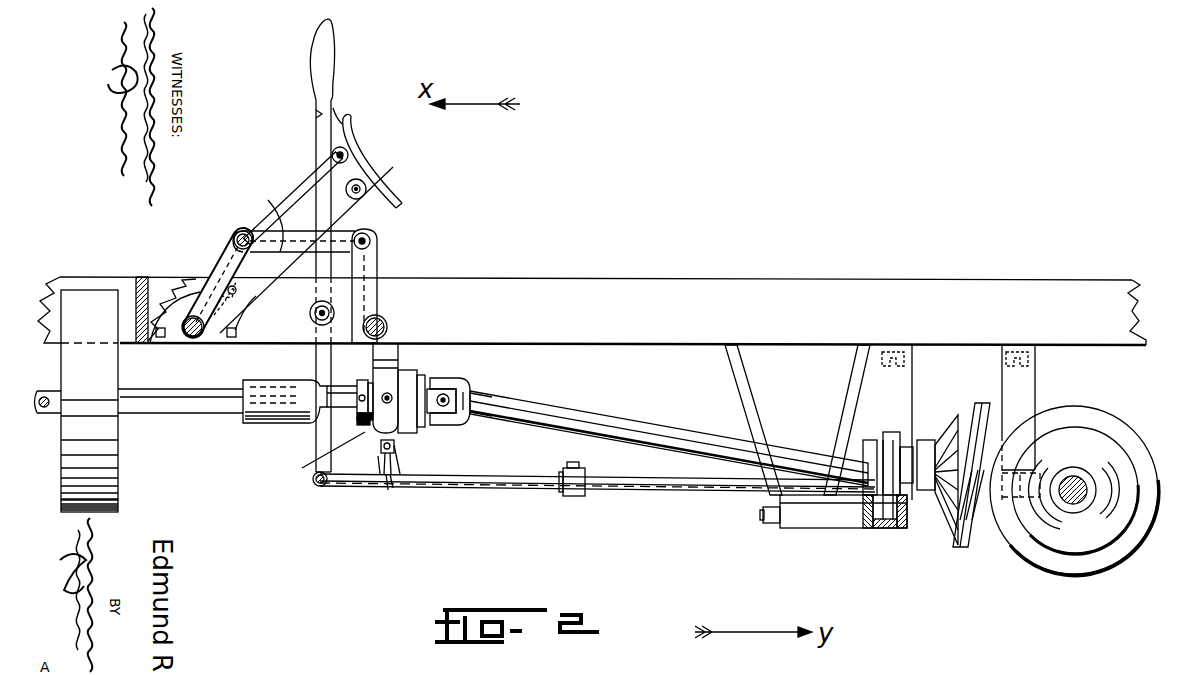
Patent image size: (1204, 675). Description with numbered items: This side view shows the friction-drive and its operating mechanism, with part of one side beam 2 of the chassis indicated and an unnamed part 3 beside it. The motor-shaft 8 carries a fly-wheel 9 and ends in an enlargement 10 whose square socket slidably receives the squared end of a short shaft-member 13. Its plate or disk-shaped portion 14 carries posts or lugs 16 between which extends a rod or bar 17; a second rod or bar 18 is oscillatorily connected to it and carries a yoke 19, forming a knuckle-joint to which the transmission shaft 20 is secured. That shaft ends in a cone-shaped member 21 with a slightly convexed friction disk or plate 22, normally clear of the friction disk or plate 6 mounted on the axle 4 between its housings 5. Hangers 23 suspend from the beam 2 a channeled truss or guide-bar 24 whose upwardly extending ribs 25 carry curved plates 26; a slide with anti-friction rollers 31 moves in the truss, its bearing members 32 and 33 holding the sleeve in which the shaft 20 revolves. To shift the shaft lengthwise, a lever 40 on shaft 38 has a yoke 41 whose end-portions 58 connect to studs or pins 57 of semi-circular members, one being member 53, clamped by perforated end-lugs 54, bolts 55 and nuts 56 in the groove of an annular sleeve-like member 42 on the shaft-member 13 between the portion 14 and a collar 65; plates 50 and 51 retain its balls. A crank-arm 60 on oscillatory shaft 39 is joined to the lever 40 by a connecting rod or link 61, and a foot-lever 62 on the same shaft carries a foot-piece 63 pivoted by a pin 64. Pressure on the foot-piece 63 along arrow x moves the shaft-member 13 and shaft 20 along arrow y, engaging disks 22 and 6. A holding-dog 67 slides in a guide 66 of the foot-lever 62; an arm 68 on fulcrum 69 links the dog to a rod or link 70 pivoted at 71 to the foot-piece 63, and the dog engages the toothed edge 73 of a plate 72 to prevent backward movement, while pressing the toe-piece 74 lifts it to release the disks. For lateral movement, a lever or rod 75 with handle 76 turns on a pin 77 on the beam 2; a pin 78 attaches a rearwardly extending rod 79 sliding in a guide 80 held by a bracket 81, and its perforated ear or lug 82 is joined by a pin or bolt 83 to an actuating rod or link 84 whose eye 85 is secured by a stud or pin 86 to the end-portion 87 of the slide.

The side beam 2 is at (852, 292).
The beam end block 3 is at (137, 291).
The axle 4 is at (1086, 506).
The housing 5 is at (1102, 453).
The friction disk or plate 6 is at (1120, 431).
The motor-shaft 8 is at (122, 401).
The fly-wheel 9 is at (118, 474).
The enlargement 10 is at (249, 424).
The shaft-member 13 is at (347, 402).
The plate or disk-shaped portion 14 is at (422, 379).
The posts or lugs 16 is at (455, 386).
The rod or bar 17 is at (471, 399).
The second rod or bar 18 is at (474, 408).
The yoke 19 is at (494, 422).
The transmission shaft 20 is at (615, 418).
The cone-shaped member 21 is at (942, 422).
The friction disk or plate 22 is at (986, 405).
The hanger 23 is at (852, 386).
The channeled truss or guide-bar 24 is at (781, 525).
The upwardly extending rib 25 is at (863, 527).
The curved plate 26 is at (792, 532).
The anti-friction wheel or roller 31 is at (906, 530).
The retaining or bearing member 32 is at (927, 458).
The retaining or bearing member 33 is at (905, 433).
The shaft 38 is at (387, 321).
The shaft 39 is at (201, 339).
The lever 40 is at (378, 265).
The yoke 41 is at (400, 368).
The annular sleeve-like member 42 is at (374, 513).
The plate 50 is at (457, 423).
The plate 51 is at (371, 375).
The semi-circular member 53 is at (382, 476).
The perforated end-lug 54 is at (399, 468).
The bolt 55 is at (388, 476).
The nut 56 is at (392, 476).
The stud or pin 57 is at (357, 421).
The end-portion of the yoke 58 is at (331, 489).
The crank-arm 60 is at (225, 285).
The connecting rod or link 61 is at (373, 237).
The foot-lever 62 is at (284, 263).
The foot-piece 63 is at (403, 203).
The pin 64 is at (368, 187).
The collar 65 is at (302, 464).
The guide 66 is at (246, 291).
The holding-dog 67 is at (249, 333).
The arm 68 is at (268, 207).
The fulcrum 69 is at (236, 245).
The rod or link 70 is at (312, 176).
The pivot 71 is at (350, 161).
The plate 72 is at (174, 338).
The serrated or toothed edge 73 is at (178, 291).
The toe-piece 74 is at (344, 126).
The lever or rod 75 is at (318, 121).
The handle 76 is at (330, 42).
The pin 77 is at (311, 318).
The pin 78 is at (316, 482).
The rearwardly extending rod 79 is at (714, 479).
The guide 80 is at (988, 506).
The bracket 81 is at (929, 370).
The perforated ear or lug 82 is at (588, 480).
The pin or bolt 83 is at (571, 470).
The actuating rod or link 84 is at (679, 492).
The eye 85 is at (874, 536).
The stud, bolt or pin 86 is at (872, 478).
The end-portion of the slide 87 is at (889, 528).